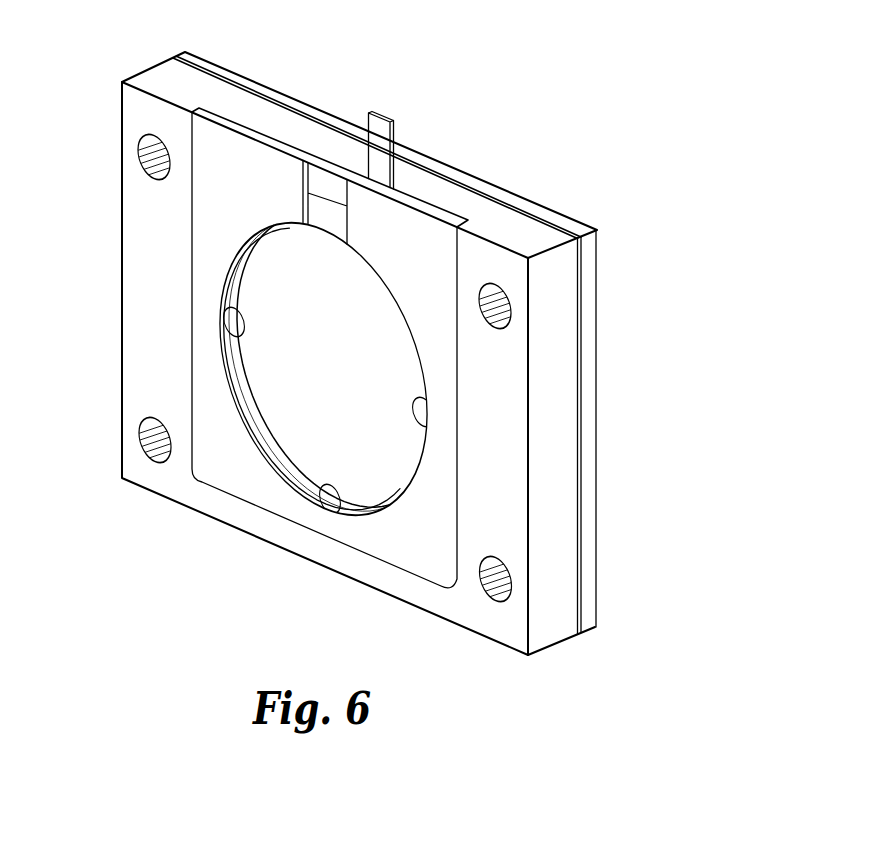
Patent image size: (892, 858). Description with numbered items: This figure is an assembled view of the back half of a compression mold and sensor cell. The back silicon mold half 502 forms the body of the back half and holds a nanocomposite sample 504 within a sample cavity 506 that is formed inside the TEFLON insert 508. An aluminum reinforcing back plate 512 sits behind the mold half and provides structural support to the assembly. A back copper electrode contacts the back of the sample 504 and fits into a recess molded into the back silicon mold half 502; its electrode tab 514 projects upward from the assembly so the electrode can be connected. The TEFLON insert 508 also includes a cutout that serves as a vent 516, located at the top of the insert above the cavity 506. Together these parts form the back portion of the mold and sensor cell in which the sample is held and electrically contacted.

The back silicon mold half 502 is at (566, 641).
The nanocomposite sample 504 is at (220, 300).
The sample cavity 506 is at (338, 359).
The TEFLON insert 508 is at (433, 215).
The aluminum reinforcing back plate 512 is at (597, 346).
The electrode tab 514 is at (400, 135).
The vent cutout 516 is at (335, 181).